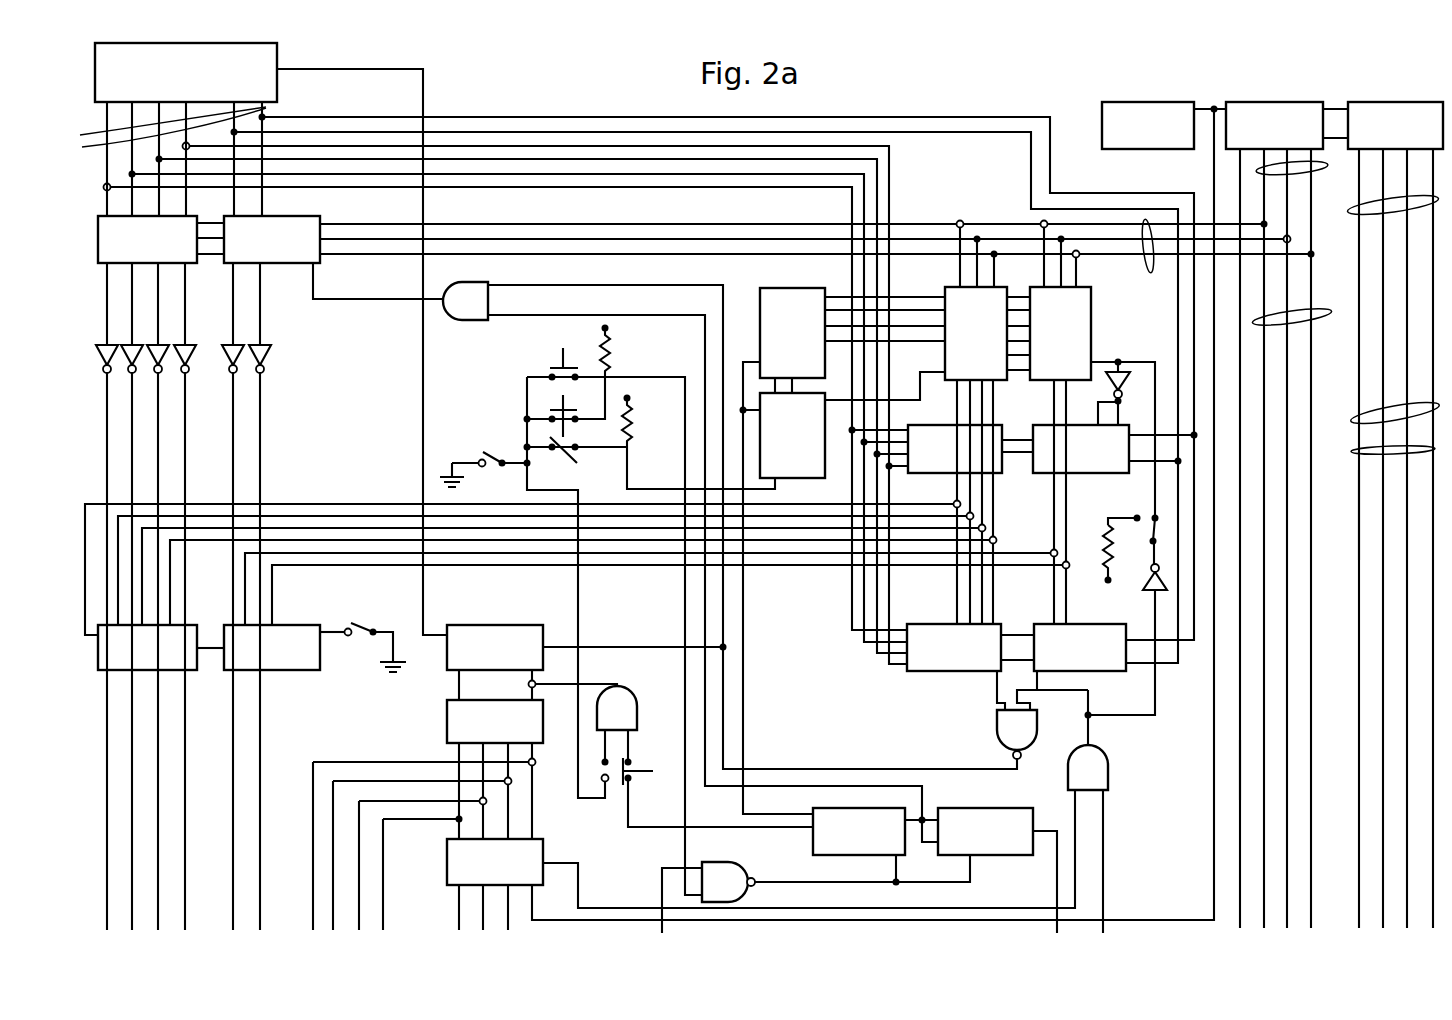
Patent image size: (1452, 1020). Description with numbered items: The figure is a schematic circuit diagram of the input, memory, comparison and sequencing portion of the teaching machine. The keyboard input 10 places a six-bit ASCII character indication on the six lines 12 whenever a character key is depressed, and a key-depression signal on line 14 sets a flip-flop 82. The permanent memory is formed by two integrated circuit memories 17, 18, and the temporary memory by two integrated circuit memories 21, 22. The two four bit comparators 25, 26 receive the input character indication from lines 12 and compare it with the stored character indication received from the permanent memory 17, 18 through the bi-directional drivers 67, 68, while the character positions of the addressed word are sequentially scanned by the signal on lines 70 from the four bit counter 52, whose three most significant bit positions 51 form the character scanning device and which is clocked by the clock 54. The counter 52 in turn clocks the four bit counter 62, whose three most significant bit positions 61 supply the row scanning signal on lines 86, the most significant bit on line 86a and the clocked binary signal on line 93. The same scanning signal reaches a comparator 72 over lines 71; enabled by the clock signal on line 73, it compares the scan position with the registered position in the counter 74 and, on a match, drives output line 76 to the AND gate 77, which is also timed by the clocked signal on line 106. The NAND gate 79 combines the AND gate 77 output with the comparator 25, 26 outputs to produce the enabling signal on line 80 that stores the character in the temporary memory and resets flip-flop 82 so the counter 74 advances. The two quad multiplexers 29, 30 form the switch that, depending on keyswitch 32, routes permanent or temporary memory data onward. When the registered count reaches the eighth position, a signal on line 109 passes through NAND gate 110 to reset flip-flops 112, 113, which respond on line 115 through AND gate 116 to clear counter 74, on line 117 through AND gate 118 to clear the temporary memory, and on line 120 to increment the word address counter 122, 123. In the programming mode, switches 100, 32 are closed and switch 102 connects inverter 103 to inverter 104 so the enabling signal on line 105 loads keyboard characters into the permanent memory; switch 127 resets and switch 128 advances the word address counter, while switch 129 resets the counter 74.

The keyboard input 10 is at (277, 53).
The lines 12 is at (162, 159).
The line 14 is at (423, 100).
The integrated circuit memory 21 is at (97, 221).
The integrated circuit memory 22 is at (318, 217).
The integrated circuit memory 17 is at (946, 285).
The integrated circuit memory 18 is at (1093, 311).
The four bit comparator 25 is at (941, 623).
The four bit comparator 26 is at (1043, 623).
The quad multiplexer 29 is at (186, 625).
The quad multiplexer 30 is at (289, 625).
The keyswitch 32 is at (361, 625).
The three most significant bit positions 51 is at (1328, 171).
The four bit counter 52 is at (1273, 100).
The clock 54 is at (1158, 100).
The three most significant bit positions 61 is at (1349, 213).
The four bit counter 62 is at (1383, 100).
The bi-directional driver 67 is at (945, 424).
The bi-directional driver 68 is at (1048, 424).
The lines 70 is at (817, 258).
The lines 71 is at (1325, 318).
The comparator 72 is at (447, 866).
The line 73 is at (1214, 838).
The counter 74 is at (447, 715).
The output line 76 is at (582, 881).
The AND gate 77 is at (1110, 762).
The NAND gate 79 is at (995, 726).
The line 80 is at (820, 769).
The flip-flop 82 is at (476, 623).
The lines 86 is at (1352, 420).
The line 86a is at (1352, 451).
The line 93 is at (1356, 525).
The switch 100 is at (495, 438).
The switch 102 is at (1140, 516).
The inverter 103 is at (1145, 583).
The inverter 104 is at (1122, 370).
The line 105 is at (1155, 695).
The line 106 is at (1238, 776).
The line 109 is at (660, 872).
The NAND gate 110 is at (735, 862).
The flip-flop 112 is at (843, 857).
The flip-flop 113 is at (985, 857).
The line 115 is at (670, 826).
The AND gate 116 is at (626, 693).
The line 117 is at (632, 318).
The AND gate 118 is at (478, 322).
The line 120 is at (745, 700).
The word address counter 122 is at (797, 287).
The word address counter 123 is at (798, 481).
The double pole single throw switch 127 is at (576, 460).
The switch 128 is at (557, 365).
The switch 129 is at (634, 776).